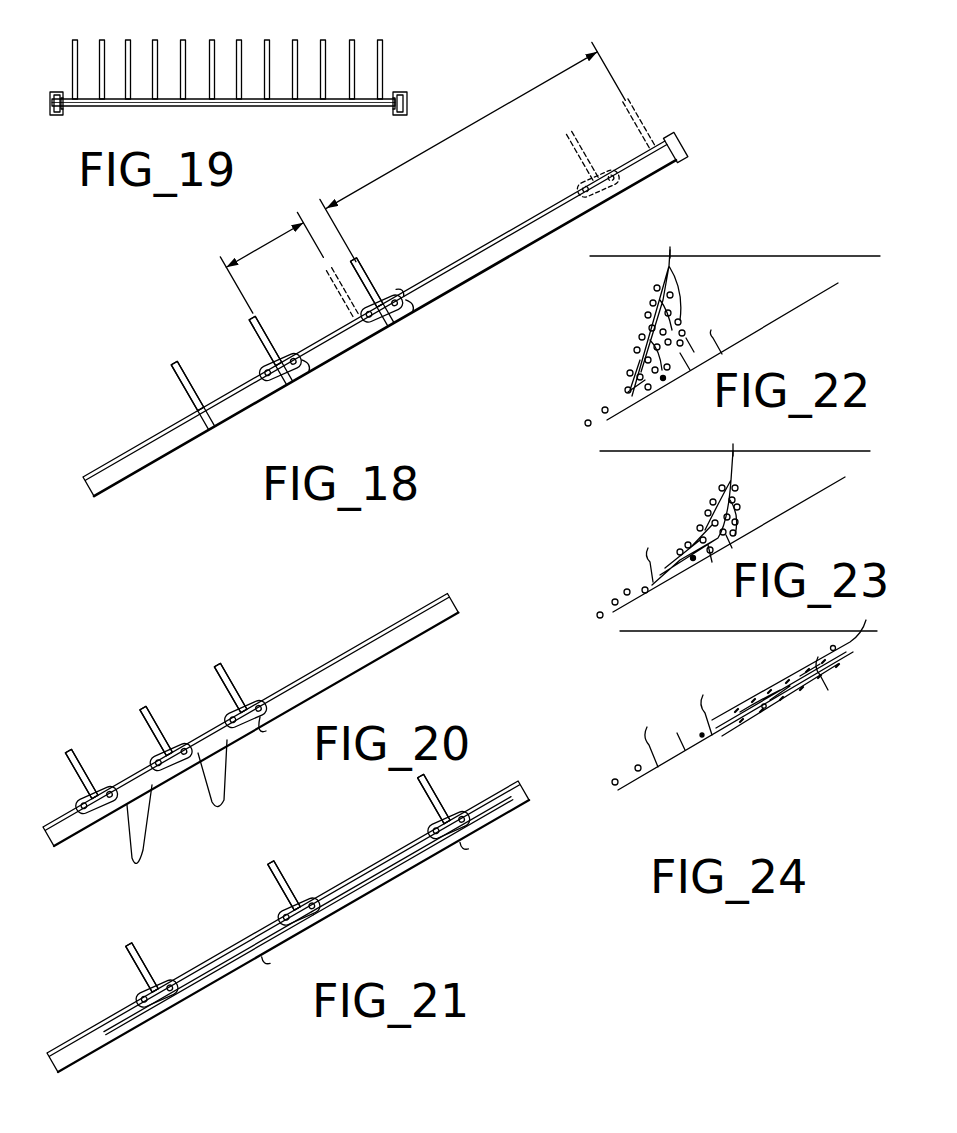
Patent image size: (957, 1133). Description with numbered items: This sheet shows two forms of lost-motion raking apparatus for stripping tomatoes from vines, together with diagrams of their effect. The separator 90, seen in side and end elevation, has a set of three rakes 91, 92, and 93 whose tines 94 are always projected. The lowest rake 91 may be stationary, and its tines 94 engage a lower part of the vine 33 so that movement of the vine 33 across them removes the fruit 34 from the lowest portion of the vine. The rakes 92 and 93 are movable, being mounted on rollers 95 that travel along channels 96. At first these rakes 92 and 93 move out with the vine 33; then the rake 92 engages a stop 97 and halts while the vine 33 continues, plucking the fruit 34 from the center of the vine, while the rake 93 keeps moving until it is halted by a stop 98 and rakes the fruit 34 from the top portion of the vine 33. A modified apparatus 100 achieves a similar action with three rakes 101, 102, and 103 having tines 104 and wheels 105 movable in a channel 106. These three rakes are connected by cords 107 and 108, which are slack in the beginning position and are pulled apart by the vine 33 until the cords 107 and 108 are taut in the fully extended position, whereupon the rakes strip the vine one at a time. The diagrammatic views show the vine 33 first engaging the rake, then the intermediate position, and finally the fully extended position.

In FIG. 22, the vine 33 is at (678, 299).
In FIG. 23, the vine 33 is at (739, 502).
In FIG. 24, the vine 33 is at (773, 668).
In FIG. 22, the fruit 34 is at (586, 422).
In FIG. 23, the fruit 34 is at (612, 602).
In FIG. 24, the fruit 34 is at (615, 779).
In FIG. 18, the separator 90 is at (247, 353).
In FIG. 22, the separator 90 is at (766, 311).
In FIG. 23, the separator 90 is at (631, 563).
In FIG. 24, the separator 90 is at (681, 717).
In FIG. 18, the rake 91 is at (181, 386).
In FIG. 22, the rake 91 is at (673, 389).
In FIG. 23, the rake 91 is at (641, 552).
In FIG. 24, the rake 91 is at (640, 737).
In FIG. 19, the rake 92 is at (302, 108).
In FIG. 18, the rake 92 is at (291, 332).
In FIG. 22, the rake 92 is at (685, 357).
In FIG. 23, the rake 92 is at (709, 563).
In FIG. 24, the rake 92 is at (699, 711).
In FIG. 18, the rake 93 is at (377, 288).
In FIG. 22, the rake 93 is at (719, 341).
In FIG. 23, the rake 93 is at (734, 546).
In FIG. 24, the rake 93 is at (824, 681).
In FIG. 19, the tines 94 is at (353, 52).
In FIG. 18, the tines 94 is at (178, 360).
In FIG. 19, the rollers 95 is at (63, 108).
In FIG. 18, the rollers 95 is at (291, 379).
In FIG. 19, the channels 96 is at (405, 98).
In FIG. 18, the channels 96 is at (240, 408).
In FIG. 18, the stop 97 is at (353, 307).
In FIG. 18, the stop 98 is at (682, 140).
In FIG. 20, the apparatus 100 is at (326, 650).
In FIG. 21, the apparatus 100 is at (338, 876).
In FIG. 20, the rake 101 is at (81, 786).
In FIG. 21, the rake 101 is at (149, 988).
In FIG. 20, the rake 102 is at (151, 743).
In FIG. 21, the rake 102 is at (289, 902).
In FIG. 20, the rake 103 is at (229, 695).
In FIG. 21, the rake 103 is at (433, 812).
In FIG. 20, the tines 104 is at (68, 753).
In FIG. 21, the tines 104 is at (131, 951).
In FIG. 20, the wheels 105 is at (95, 830).
In FIG. 21, the wheels 105 is at (157, 1016).
In FIG. 20, the channel 106 is at (341, 690).
In FIG. 21, the channel 106 is at (405, 870).
In FIG. 20, the cord 107 is at (130, 856).
In FIG. 21, the cord 107 is at (218, 975).
In FIG. 20, the cord 108 is at (228, 796).
In FIG. 21, the cord 108 is at (358, 890).